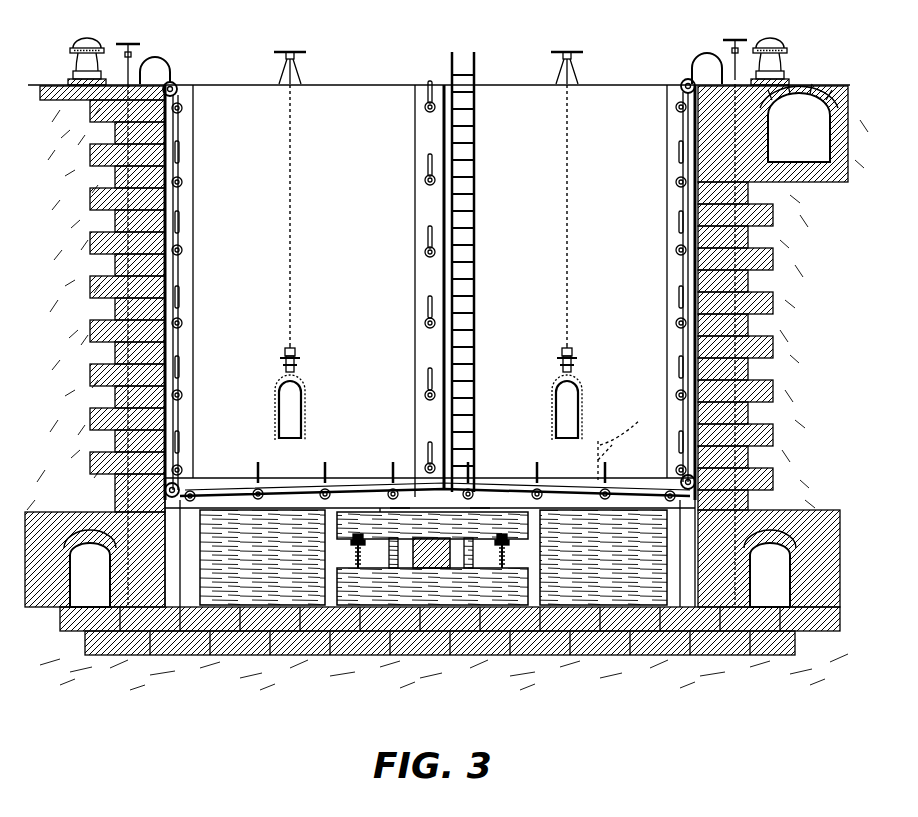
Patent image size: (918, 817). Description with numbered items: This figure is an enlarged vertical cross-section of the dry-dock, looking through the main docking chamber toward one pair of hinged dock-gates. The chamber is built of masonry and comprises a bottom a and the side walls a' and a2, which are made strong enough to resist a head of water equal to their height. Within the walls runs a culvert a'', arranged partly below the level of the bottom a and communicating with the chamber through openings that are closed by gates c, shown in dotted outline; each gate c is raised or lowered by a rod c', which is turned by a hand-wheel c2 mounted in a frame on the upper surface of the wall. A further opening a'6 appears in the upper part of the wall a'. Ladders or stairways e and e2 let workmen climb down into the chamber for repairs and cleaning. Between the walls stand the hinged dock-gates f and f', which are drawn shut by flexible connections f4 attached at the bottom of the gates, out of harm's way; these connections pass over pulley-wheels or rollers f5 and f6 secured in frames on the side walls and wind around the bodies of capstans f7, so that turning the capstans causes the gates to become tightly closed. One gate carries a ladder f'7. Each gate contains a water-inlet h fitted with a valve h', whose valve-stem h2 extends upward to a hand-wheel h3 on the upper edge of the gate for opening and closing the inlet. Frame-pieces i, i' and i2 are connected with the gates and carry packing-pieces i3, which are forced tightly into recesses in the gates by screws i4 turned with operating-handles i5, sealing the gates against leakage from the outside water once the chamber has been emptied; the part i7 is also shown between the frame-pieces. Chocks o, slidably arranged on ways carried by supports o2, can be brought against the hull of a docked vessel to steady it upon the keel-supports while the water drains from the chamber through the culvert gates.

The bottom a is at (436, 608).
The side wall a' is at (783, 298).
The side wall a2 is at (92, 236).
The upper wall opening a'6 is at (799, 123).
The culvert a'' is at (430, 568).
The gate c is at (430, 586).
The rod c' is at (433, 292).
The hand-wheel c2 is at (740, 34).
The ladder or stairway e is at (178, 136).
The ladder or stairway e2 is at (168, 540).
The hinged dock-gate f is at (430, 292).
The hinged dock-gate f' is at (386, 291).
The flexible connection f4 is at (180, 120).
The pulley-wheel or roller f5 is at (180, 488).
The pulley-wheel or roller f6 is at (178, 84).
The capstan f7 is at (88, 48).
The ladder f'7 is at (481, 272).
The water-inlet h is at (455, 410).
The valve h' is at (443, 393).
The valve-stem h2 is at (292, 124).
The hand-wheel h3 is at (294, 52).
The frame-piece i is at (433, 532).
The frame-piece i' is at (427, 376).
The frame-piece i2 is at (414, 205).
The packing-piece i3 is at (350, 560).
The screw i4 is at (183, 183).
The operating-handle i5 is at (181, 228).
The spacer block i7 is at (431, 553).
The chock o is at (619, 449).
The support o2 is at (200, 572).